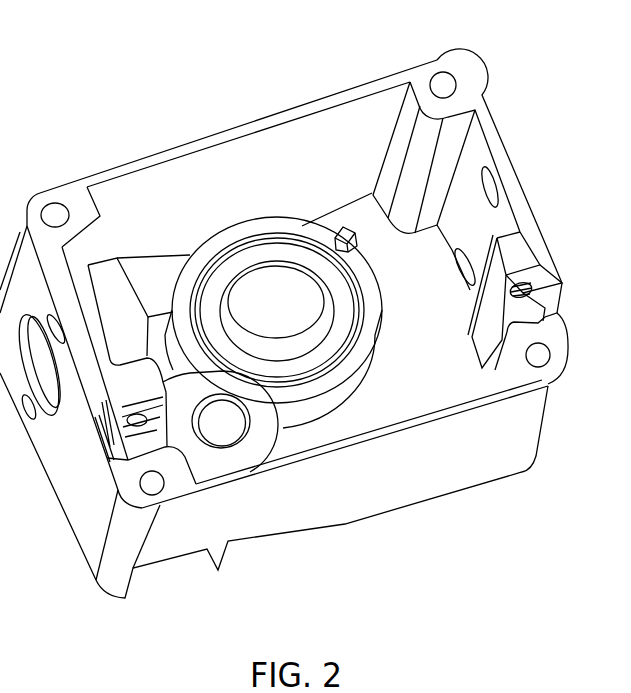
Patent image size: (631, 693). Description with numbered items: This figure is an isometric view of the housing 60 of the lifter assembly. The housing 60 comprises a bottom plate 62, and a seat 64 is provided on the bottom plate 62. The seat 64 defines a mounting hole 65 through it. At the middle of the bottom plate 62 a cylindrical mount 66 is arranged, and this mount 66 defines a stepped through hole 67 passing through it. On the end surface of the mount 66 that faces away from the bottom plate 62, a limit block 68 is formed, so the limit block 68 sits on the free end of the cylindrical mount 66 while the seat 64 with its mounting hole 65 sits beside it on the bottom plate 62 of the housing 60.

The housing 60 is at (485, 445).
The bottom plate 62 is at (445, 325).
The seat 64 is at (267, 430).
The mounting hole 65 is at (228, 427).
The cylindrical mount 66 is at (266, 226).
The stepped through hole 67 is at (250, 320).
The limit block 68 is at (347, 232).